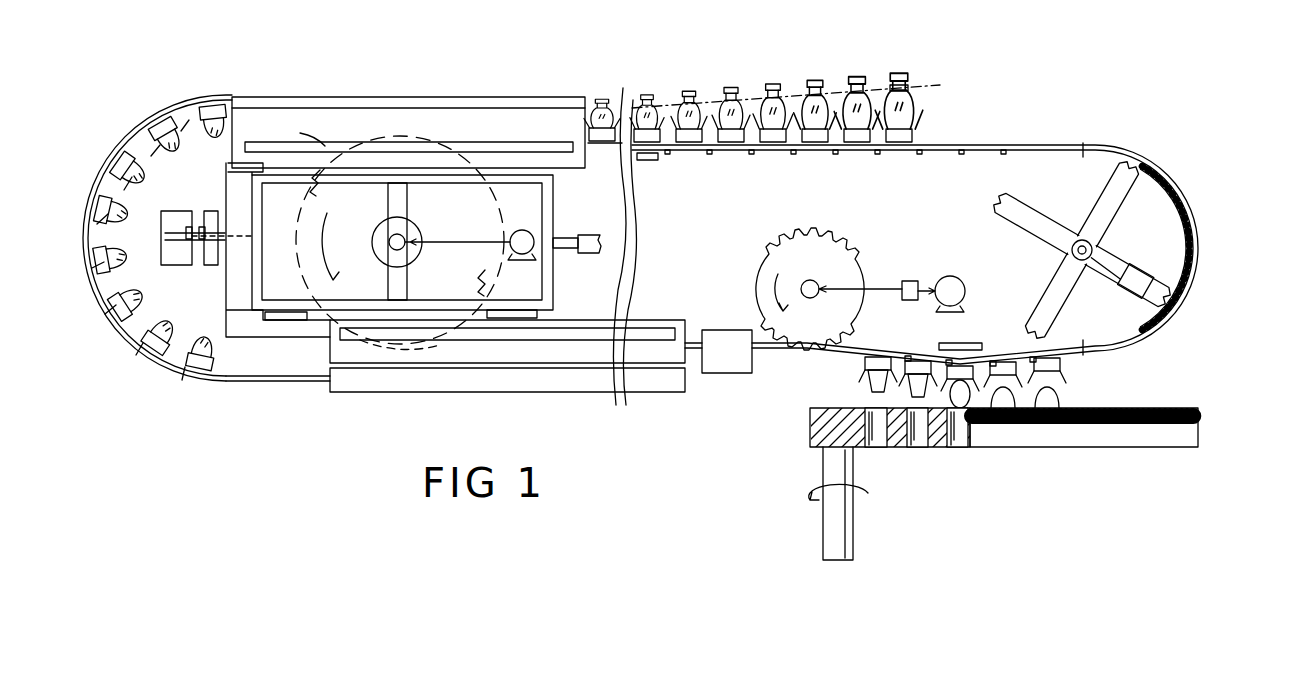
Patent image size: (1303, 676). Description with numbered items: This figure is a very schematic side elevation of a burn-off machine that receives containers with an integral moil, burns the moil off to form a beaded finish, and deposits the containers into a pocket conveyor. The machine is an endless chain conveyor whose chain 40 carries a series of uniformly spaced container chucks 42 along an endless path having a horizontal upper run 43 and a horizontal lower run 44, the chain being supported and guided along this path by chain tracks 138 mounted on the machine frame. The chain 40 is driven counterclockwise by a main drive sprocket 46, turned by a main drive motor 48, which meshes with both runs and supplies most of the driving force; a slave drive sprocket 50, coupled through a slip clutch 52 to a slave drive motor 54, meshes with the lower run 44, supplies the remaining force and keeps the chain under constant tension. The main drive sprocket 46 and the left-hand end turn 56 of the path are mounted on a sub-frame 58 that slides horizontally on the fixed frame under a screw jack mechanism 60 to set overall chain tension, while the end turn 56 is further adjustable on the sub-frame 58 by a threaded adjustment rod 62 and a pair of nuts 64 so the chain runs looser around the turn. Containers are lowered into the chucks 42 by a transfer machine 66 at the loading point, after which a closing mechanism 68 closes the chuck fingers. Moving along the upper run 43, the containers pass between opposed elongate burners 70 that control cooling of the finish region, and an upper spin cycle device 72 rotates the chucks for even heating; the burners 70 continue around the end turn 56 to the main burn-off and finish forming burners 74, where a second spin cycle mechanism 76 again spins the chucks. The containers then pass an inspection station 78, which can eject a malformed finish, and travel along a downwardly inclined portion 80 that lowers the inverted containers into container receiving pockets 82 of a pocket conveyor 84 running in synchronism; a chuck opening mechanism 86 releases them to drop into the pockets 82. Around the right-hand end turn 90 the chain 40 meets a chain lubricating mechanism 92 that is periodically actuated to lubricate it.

The chain 40 is at (952, 151).
The container chucks 42 is at (162, 332).
The upper run 43 is at (647, 83).
The lower run 44 is at (697, 359).
The main drive sprocket 46 is at (480, 220).
The main drive motor 48 is at (527, 238).
The slave drive sprocket 50 is at (838, 265).
The slip clutch 52 is at (914, 283).
The slave drive motor 54 is at (958, 291).
The left-hand end turn 56 is at (160, 175).
The sub-frame 58 is at (280, 181).
The screw jack mechanism 60 is at (592, 254).
The shaft 62 is at (240, 240).
The nuts 64 is at (210, 210).
The transfer machine 66 is at (900, 79).
The closing mechanism 68 is at (652, 161).
The burners 70 is at (398, 100).
The upper spin cycle device 72 is at (378, 139).
The main burn-off and finish forming burners 74 is at (370, 378).
The second spin cycle mechanism 76 is at (455, 337).
The inspection station 78 is at (727, 351).
The downwardly inclined portion 80 is at (927, 352).
The container receiving pockets 82 is at (915, 446).
The pocket conveyor 84 is at (1077, 458).
The chuck opening mechanism 86 is at (963, 344).
The right-hand end turn 90 is at (1172, 222).
The chain lubricating mechanism 92 is at (1138, 262).
The guide rail 138 is at (214, 106).